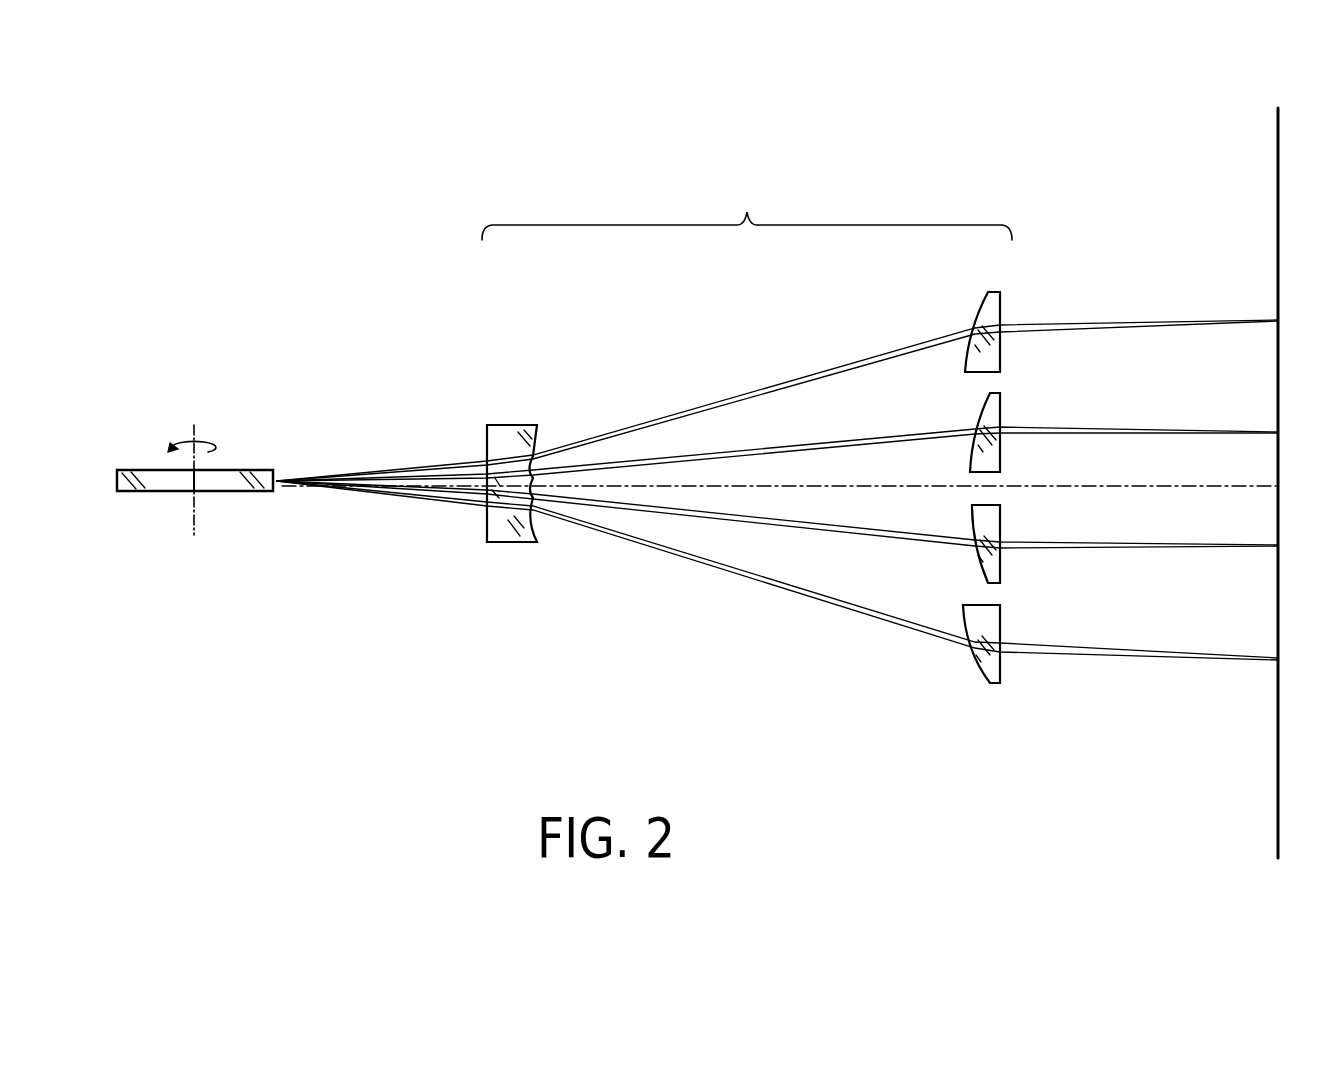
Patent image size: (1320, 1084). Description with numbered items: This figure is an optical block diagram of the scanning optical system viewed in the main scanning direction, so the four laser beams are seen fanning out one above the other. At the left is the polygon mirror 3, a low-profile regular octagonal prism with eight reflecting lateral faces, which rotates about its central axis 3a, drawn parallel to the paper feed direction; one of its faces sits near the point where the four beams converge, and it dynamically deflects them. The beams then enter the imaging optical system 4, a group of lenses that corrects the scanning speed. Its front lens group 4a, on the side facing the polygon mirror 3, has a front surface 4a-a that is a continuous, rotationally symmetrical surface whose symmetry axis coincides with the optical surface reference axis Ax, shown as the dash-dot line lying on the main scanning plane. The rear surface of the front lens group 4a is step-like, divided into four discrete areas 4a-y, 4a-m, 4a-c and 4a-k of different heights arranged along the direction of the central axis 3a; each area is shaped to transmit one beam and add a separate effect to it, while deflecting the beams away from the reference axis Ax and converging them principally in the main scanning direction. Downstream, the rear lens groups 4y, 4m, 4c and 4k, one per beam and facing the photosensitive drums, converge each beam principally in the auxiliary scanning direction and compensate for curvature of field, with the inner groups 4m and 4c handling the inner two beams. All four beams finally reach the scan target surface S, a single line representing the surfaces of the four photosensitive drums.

The polygon mirror 3 is at (246, 470).
The central axis 3a is at (188, 528).
The imaging optical system 4 is at (777, 440).
The front lens group 4a is at (492, 420).
The area of the rear surface 4a-y is at (538, 447).
The area of the rear surface 4a-m is at (536, 472).
The area of the rear surface 4a-c is at (536, 500).
The area of the rear surface 4a-k is at (536, 523).
The front surface 4a-a is at (487, 516).
The rear lens group 4y is at (985, 311).
The rear lens group 4m is at (985, 414).
The rear lens group 4c is at (972, 560).
The rear lens group 4k is at (972, 660).
The optical surface reference axis Ax is at (830, 488).
The scan target surface S is at (1278, 172).